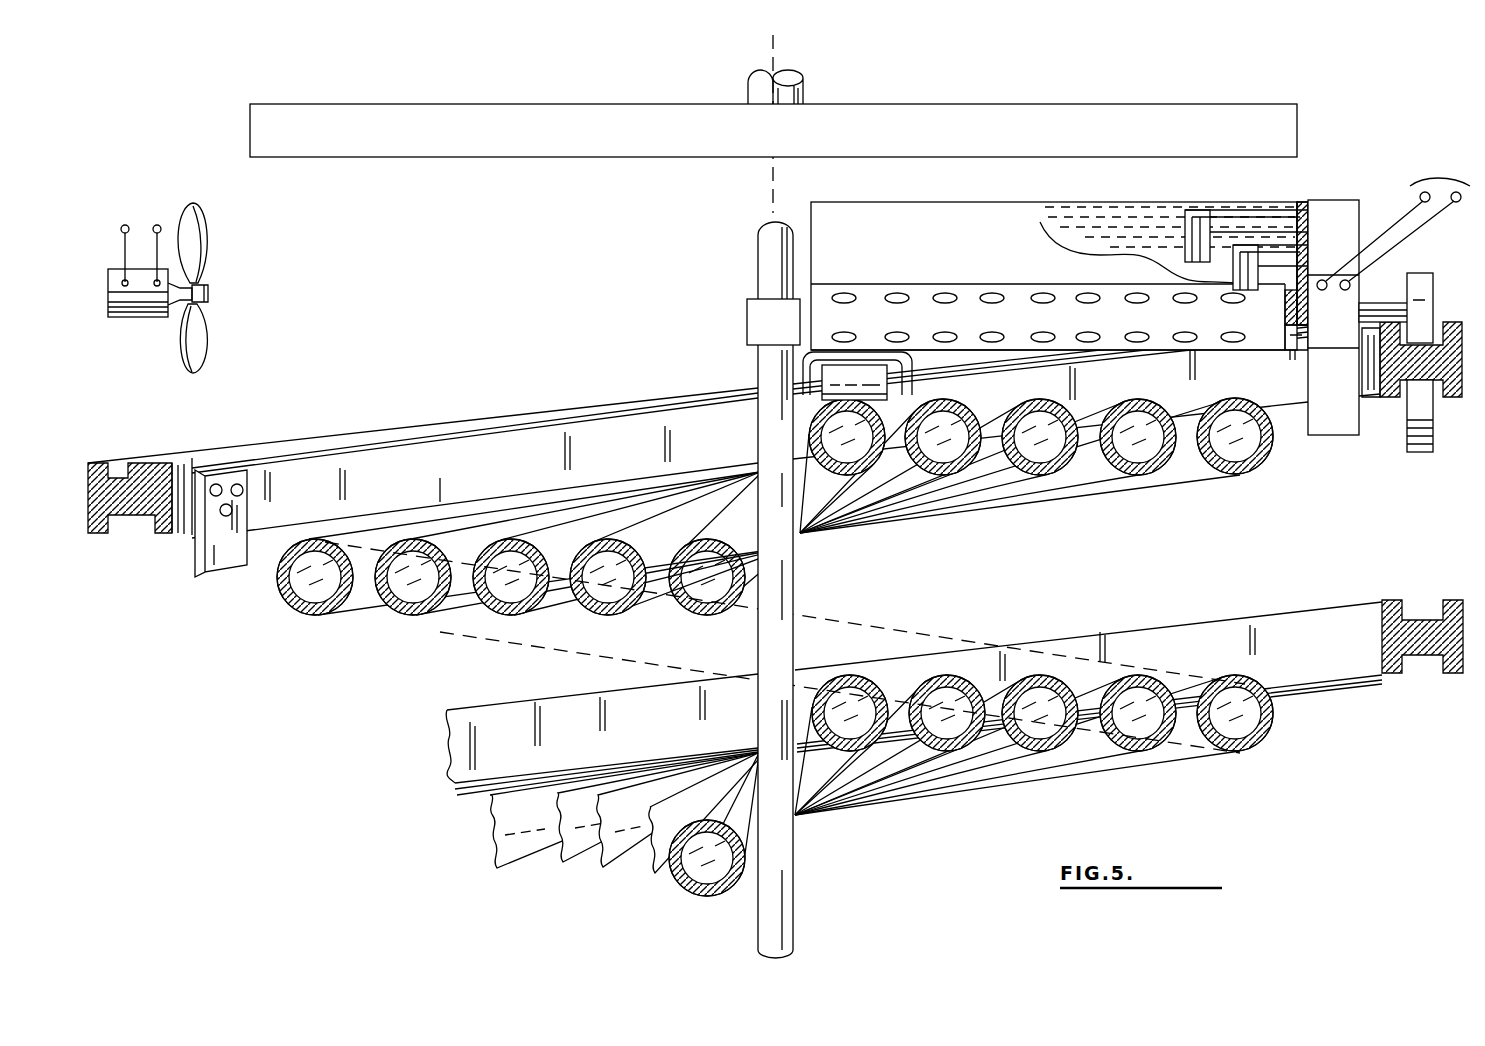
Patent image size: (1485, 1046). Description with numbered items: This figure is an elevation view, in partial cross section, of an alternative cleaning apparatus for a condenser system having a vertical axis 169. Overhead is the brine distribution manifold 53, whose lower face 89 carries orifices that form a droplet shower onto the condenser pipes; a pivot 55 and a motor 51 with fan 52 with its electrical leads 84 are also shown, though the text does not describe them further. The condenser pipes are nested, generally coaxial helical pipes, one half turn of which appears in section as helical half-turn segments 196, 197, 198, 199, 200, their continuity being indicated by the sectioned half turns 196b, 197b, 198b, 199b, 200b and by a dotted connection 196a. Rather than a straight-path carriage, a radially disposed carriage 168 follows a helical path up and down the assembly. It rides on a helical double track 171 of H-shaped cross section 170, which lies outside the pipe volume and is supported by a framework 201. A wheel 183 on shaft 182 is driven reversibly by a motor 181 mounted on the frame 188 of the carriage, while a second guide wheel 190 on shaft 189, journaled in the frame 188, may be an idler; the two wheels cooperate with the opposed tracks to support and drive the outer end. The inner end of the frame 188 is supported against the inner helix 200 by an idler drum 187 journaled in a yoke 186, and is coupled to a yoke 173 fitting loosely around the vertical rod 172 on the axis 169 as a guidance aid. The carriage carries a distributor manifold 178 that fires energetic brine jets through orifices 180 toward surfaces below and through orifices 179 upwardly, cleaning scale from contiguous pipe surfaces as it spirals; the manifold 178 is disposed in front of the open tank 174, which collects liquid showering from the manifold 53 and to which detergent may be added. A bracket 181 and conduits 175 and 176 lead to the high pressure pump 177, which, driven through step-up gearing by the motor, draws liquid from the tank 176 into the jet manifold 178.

The motor 51 is at (108, 283).
The fan 52 is at (204, 324).
The brine distribution manifold 53 is at (1038, 103).
The pivot pin 55 is at (808, 84).
The electrical leads 84 is at (1398, 213).
The lower face 89 is at (444, 159).
The carriage 168 is at (862, 186).
The vertical axis 169 is at (772, 184).
The H-shaped cross section 170 is at (128, 463).
The double track 171 is at (320, 444).
The vertical rod or pipe 172 is at (758, 244).
The yoke 173 is at (746, 319).
The tank 174 is at (986, 202).
The inlet conduit 175 is at (1191, 210).
The tank 176 is at (1250, 245).
The high pressure pump 177 is at (1330, 200).
The distributor manifold 178 is at (847, 293).
The orifices 179 is at (1043, 293).
The orifices 180 is at (1090, 340).
The motor 181 is at (1312, 340).
The shaft 182 is at (1388, 303).
The wheel 183 is at (1433, 300).
The yoke 186 is at (803, 372).
The idler drum 187 is at (822, 399).
The frame 188 is at (1316, 436).
The shaft 189 is at (1379, 400).
The second guide wheel 190 is at (1412, 453).
The helical half-turn segment 196 is at (302, 614).
The helical half-turn segment 197 is at (405, 624).
The helical half-turn segment 198 is at (524, 602).
The helical half-turn segment 199 is at (616, 608).
The helical half-turn segment 200 is at (692, 612).
The tube axis 196a is at (858, 622).
The half turn 196b is at (1277, 713).
The half turn 197b is at (1160, 752).
The half turn 198b is at (1062, 754).
The half turn 199b is at (966, 754).
The half turn 200b is at (877, 754).
The framework 201 is at (224, 578).